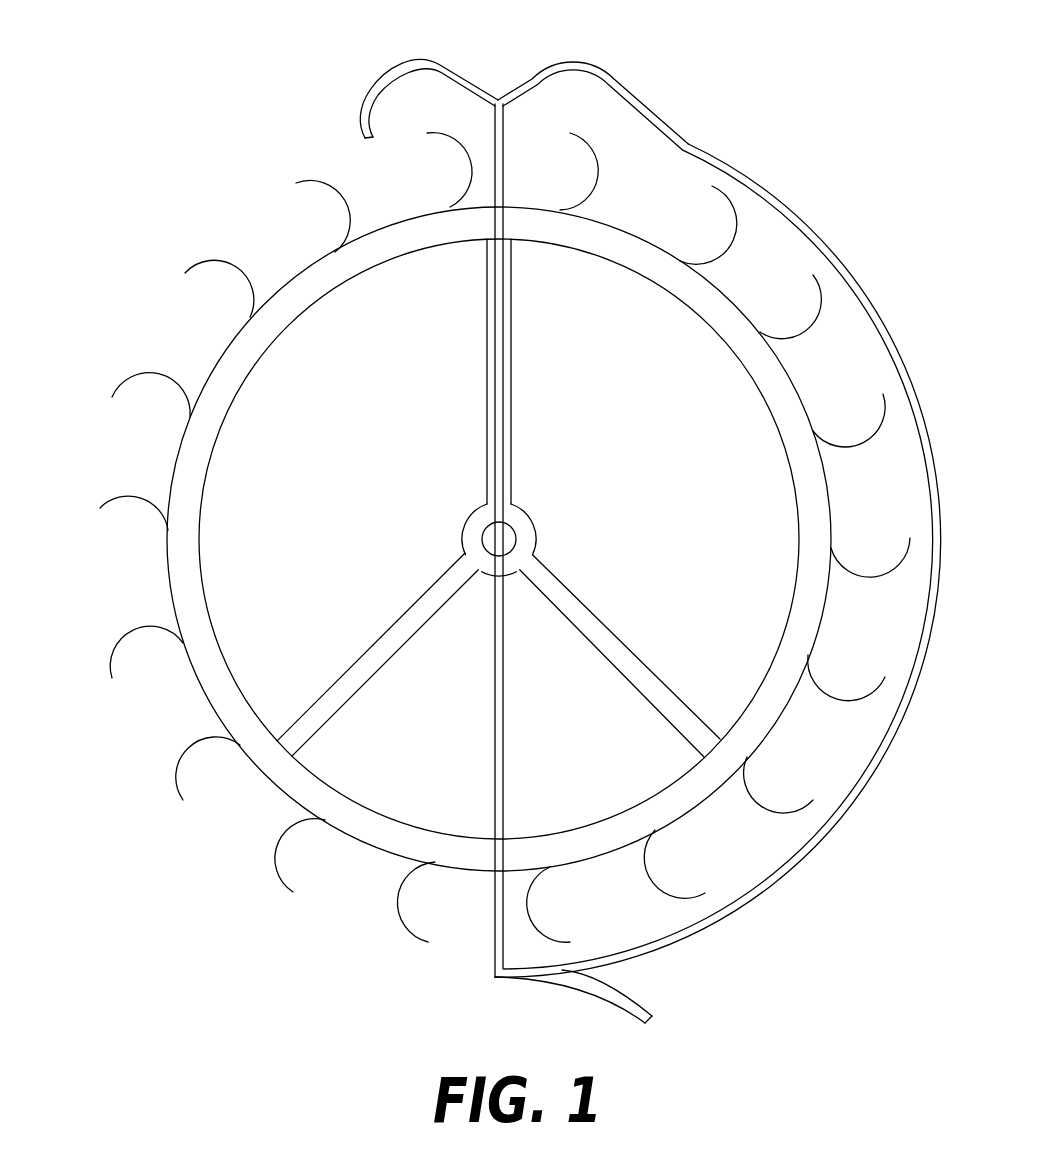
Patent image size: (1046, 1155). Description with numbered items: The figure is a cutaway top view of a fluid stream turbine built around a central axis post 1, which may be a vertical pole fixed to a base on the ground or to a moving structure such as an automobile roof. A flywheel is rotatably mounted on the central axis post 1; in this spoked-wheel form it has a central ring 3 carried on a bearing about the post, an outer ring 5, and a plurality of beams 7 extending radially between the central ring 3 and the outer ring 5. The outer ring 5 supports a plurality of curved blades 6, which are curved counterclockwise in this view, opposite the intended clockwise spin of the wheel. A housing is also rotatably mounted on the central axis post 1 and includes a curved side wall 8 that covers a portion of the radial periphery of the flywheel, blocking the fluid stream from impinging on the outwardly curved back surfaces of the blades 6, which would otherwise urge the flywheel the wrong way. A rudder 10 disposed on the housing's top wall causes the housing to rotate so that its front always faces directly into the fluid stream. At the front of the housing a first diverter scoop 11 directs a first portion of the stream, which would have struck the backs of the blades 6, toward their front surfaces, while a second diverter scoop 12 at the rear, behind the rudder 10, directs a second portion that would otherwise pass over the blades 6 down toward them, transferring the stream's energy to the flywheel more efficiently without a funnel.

The central axis post 1 is at (490, 527).
The central ring 3 is at (472, 540).
The outer ring 5 is at (183, 587).
The curved blades 6 is at (194, 750).
The beams 7 is at (348, 685).
The curved side wall 8 is at (740, 900).
The rudder 10 is at (488, 353).
The first diverter scoop 11 is at (642, 1010).
The second diverter scoop 12 is at (400, 66).